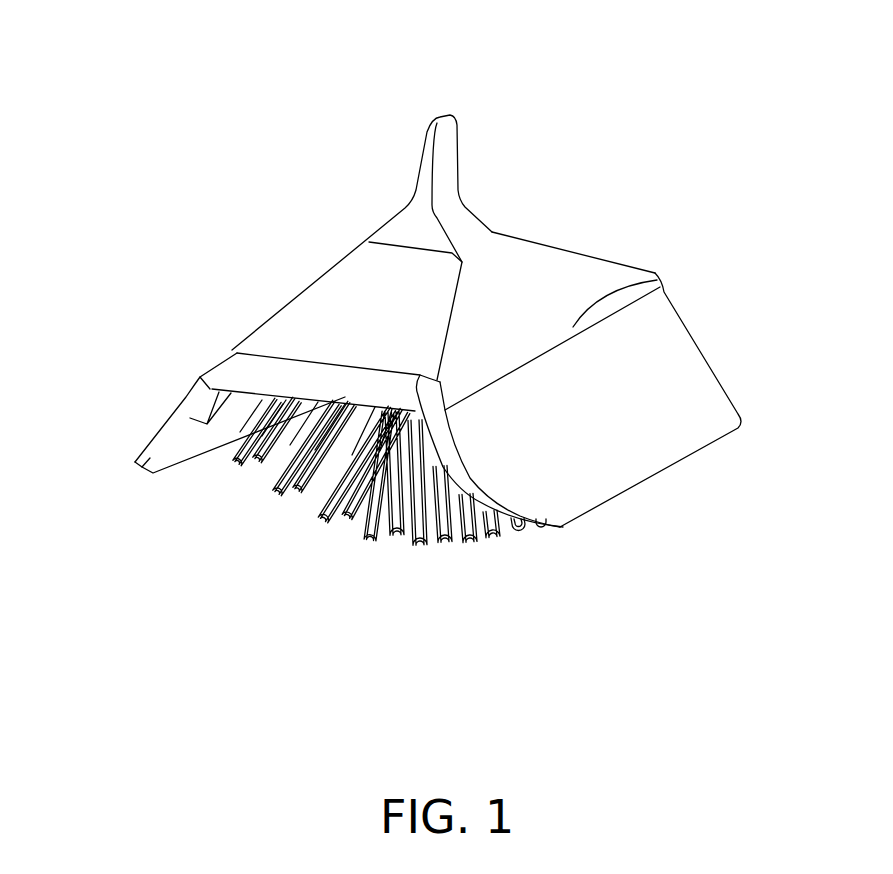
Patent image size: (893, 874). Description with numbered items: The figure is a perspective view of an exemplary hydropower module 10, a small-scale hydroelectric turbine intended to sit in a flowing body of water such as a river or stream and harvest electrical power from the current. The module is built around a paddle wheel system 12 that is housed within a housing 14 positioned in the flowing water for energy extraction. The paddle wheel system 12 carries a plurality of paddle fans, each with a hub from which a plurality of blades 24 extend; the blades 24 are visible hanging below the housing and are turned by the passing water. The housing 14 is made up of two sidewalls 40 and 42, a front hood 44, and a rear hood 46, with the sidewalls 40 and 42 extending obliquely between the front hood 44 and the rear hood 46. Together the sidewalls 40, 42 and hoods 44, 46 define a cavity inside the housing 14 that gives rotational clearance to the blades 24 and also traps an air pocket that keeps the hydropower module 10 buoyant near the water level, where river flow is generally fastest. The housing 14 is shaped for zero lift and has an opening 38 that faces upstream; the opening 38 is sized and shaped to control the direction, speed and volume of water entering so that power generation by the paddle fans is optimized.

The hydropower module 10 is at (260, 72).
The paddle wheel system 12 is at (235, 548).
The housing 14 is at (493, 228).
The blades 24 is at (240, 455).
The opening 38 is at (142, 533).
The sidewall 40 is at (660, 277).
The sidewall 42 is at (350, 254).
The front hood 44 is at (337, 305).
The rear hood 46 is at (555, 247).